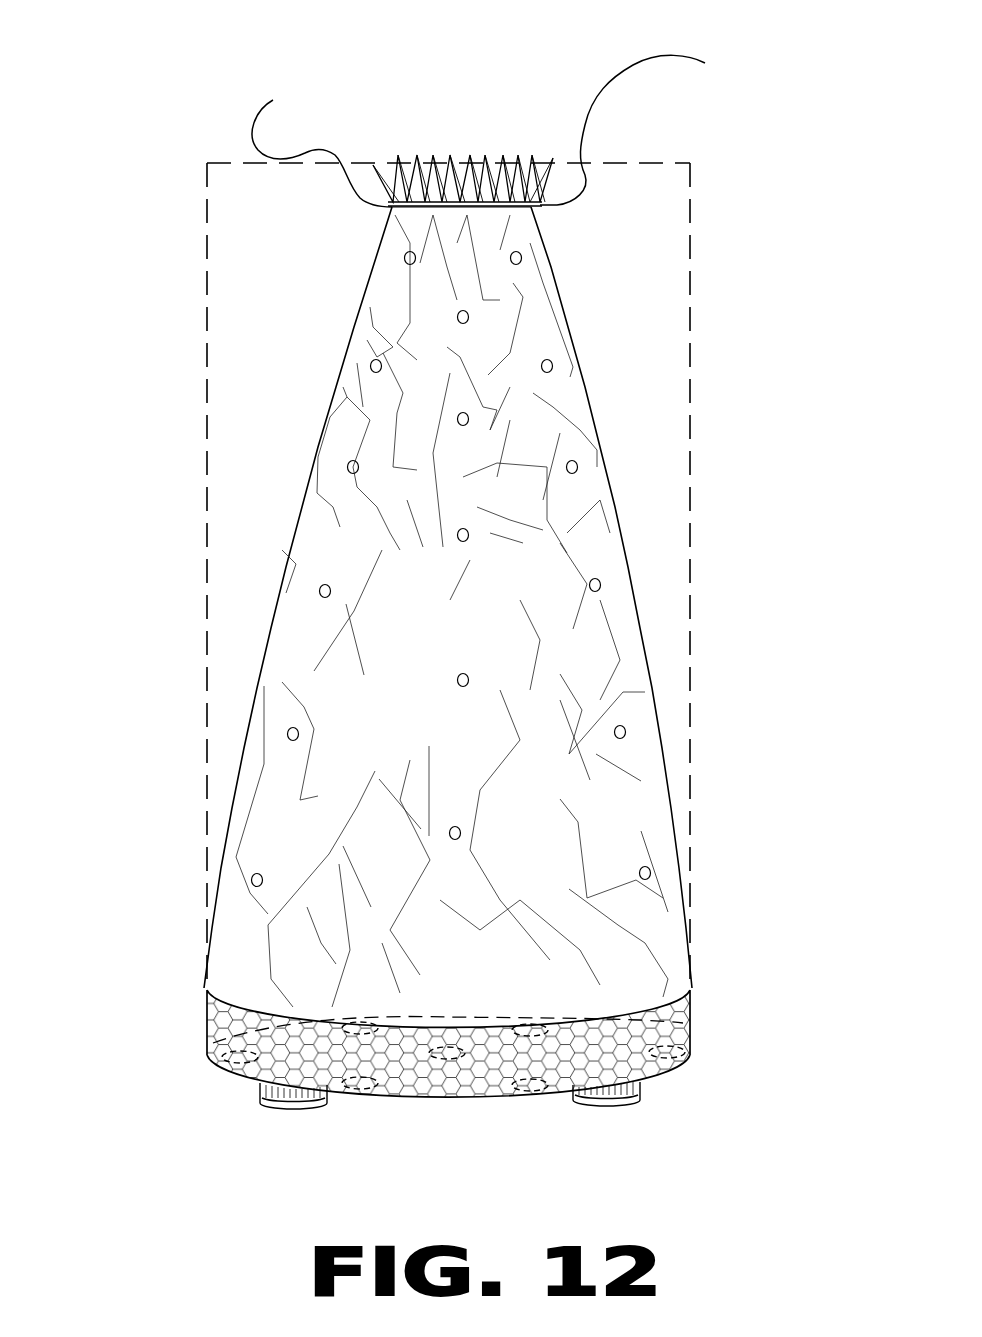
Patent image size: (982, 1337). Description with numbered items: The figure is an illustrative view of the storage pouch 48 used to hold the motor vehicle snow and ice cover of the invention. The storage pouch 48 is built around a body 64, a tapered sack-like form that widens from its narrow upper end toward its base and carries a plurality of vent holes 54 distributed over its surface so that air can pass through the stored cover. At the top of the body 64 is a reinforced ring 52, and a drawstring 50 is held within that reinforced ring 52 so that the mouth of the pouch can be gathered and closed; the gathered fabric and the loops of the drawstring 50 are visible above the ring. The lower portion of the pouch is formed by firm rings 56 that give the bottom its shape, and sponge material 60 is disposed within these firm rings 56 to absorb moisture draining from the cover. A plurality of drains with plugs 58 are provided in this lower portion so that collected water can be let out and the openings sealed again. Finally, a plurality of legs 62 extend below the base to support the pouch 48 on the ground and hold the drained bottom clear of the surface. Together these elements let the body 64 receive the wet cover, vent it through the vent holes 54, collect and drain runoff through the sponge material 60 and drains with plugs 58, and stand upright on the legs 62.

The storage pouch 48 is at (203, 375).
The drawstring 50 is at (328, 150).
The reinforced ring 52 is at (543, 222).
The vent holes 54 is at (650, 868).
The firm rings 56 is at (220, 1072).
The drains with plugs 58 is at (510, 1085).
The sponge material 60 is at (675, 1028).
The legs 62 is at (617, 1110).
The body 64 is at (298, 513).